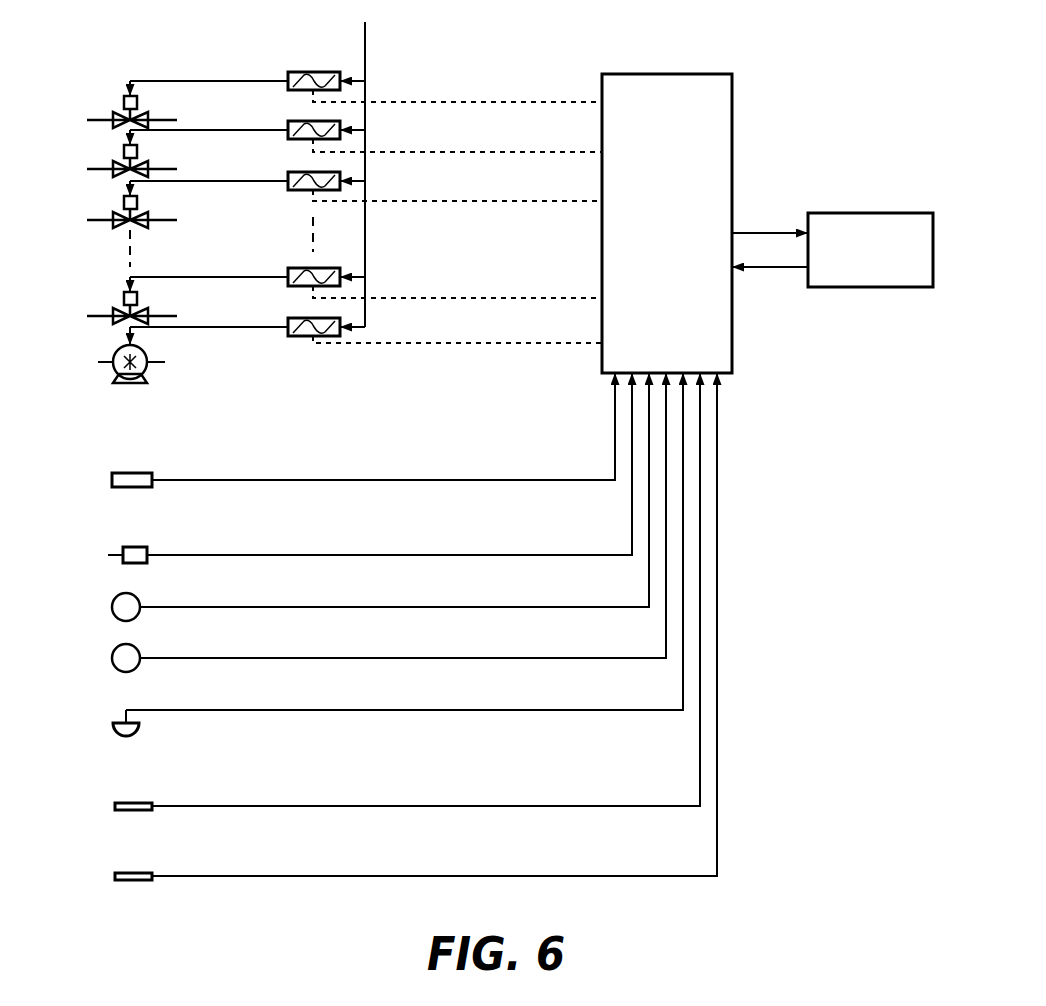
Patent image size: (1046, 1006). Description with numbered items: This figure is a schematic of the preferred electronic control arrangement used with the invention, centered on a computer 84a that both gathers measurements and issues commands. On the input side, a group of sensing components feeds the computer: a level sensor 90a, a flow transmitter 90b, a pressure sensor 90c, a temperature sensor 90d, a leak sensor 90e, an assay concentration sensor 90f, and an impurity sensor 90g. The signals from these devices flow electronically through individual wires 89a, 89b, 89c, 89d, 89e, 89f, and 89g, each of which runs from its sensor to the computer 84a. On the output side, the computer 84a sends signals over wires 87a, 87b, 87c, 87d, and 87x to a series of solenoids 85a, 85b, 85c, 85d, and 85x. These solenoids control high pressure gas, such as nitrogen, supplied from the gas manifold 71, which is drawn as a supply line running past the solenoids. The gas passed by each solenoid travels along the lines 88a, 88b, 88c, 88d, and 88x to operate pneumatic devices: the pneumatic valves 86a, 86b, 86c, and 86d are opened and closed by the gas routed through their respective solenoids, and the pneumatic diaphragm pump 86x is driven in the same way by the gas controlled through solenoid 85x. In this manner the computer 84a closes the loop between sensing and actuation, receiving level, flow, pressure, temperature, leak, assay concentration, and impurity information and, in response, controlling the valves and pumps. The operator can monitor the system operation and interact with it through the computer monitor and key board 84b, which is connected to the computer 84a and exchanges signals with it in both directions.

The gas manifold 71 is at (365, 52).
The computer 84a is at (733, 125).
The computer monitor and key board 84b is at (872, 212).
The solenoid 85a is at (307, 72).
The solenoid 85b is at (307, 121).
The solenoid 85c is at (307, 172).
The solenoid 85d is at (307, 268).
The solenoid 85x is at (307, 318).
The pneumatic valve 86a is at (115, 118).
The pneumatic valve 86b is at (115, 167).
The pneumatic valve 86c is at (115, 218).
The pneumatic valve 86d is at (115, 315).
The pneumatic diaphragm pump 86x is at (115, 358).
The wire 87a is at (488, 102).
The wire 87b is at (488, 152).
The wire 87c is at (488, 201).
The wire 87d is at (488, 298).
The wire 87x is at (488, 343).
The feed line 88a is at (163, 81).
The feed line 88b is at (163, 130).
The feed line 88c is at (163, 181).
The feed line 88d is at (163, 277).
The feed line 88x is at (163, 327).
The wire 89a is at (413, 480).
The wire 89b is at (413, 555).
The wire 89c is at (413, 607).
The wire 89d is at (413, 658).
The wire 89e is at (413, 710).
The wire 89f is at (413, 806).
The wire 89g is at (413, 876).
The level sensor 90a is at (122, 473).
The flow transmitter 90b is at (122, 548).
The pressure sensor 90c is at (115, 597).
The temperature sensor 90d is at (115, 648).
The leak sensor 90e is at (118, 720).
The assay concentration sensor 90f is at (118, 803).
The impurity sensor 90g is at (118, 873).